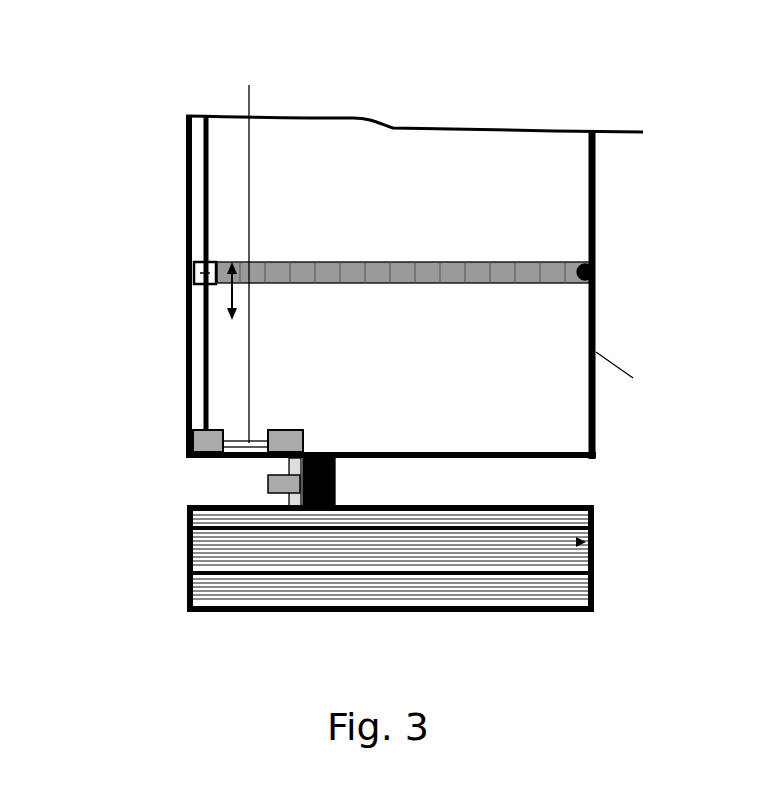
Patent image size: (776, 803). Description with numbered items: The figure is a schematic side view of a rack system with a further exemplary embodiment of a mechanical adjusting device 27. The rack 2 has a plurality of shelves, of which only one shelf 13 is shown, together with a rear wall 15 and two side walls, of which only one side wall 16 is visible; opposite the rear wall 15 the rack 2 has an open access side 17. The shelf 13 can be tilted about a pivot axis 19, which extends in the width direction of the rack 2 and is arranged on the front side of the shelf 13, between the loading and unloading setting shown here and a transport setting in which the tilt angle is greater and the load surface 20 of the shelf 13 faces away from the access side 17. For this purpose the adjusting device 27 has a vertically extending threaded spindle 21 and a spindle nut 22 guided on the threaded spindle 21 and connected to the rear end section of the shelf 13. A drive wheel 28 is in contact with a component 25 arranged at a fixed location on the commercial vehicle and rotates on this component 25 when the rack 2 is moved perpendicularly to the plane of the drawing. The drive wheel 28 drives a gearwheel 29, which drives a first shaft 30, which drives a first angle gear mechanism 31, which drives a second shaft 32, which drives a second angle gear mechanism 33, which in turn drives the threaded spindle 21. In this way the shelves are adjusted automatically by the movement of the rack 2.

The rack 2 is at (606, 202).
The shelf 13 is at (478, 262).
The rear wall 15 is at (186, 190).
The side wall 16 is at (296, 148).
The access side 17 is at (596, 352).
The pivot axis 19 is at (594, 272).
The load surface 20 is at (372, 255).
The threaded spindle 21 is at (207, 350).
The spindle nut 22 is at (192, 268).
The component 25 is at (222, 562).
The adjusting device 27 is at (178, 473).
The drive wheel 28 is at (335, 482).
The gearwheel 29 is at (291, 507).
The first shaft 30 is at (282, 465).
The first angle gear mechanism 31 is at (305, 442).
The second shaft 32 is at (248, 252).
The second angle gear mechanism 33 is at (200, 440).